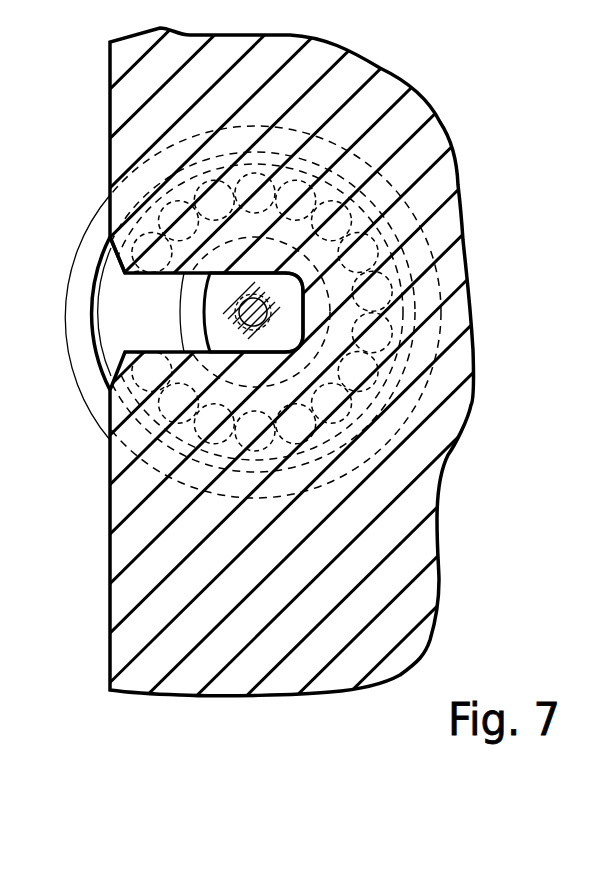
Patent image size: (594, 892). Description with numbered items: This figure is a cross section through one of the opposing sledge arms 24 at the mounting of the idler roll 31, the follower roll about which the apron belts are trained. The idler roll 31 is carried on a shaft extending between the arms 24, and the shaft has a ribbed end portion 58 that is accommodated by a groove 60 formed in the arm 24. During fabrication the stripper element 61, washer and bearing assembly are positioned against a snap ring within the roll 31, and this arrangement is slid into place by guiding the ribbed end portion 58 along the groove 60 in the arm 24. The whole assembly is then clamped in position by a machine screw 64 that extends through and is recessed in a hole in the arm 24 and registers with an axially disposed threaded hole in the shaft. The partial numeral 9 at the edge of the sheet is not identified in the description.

The cut-off reference numeral (partial) 9 is at (8, 49).
The arm 24 is at (110, 581).
The idler roll 31 is at (100, 228).
The ribbed end portion 58 is at (220, 315).
The groove 60 is at (135, 285).
The stripper element 61 is at (106, 356).
The machine screw 64 is at (268, 308).